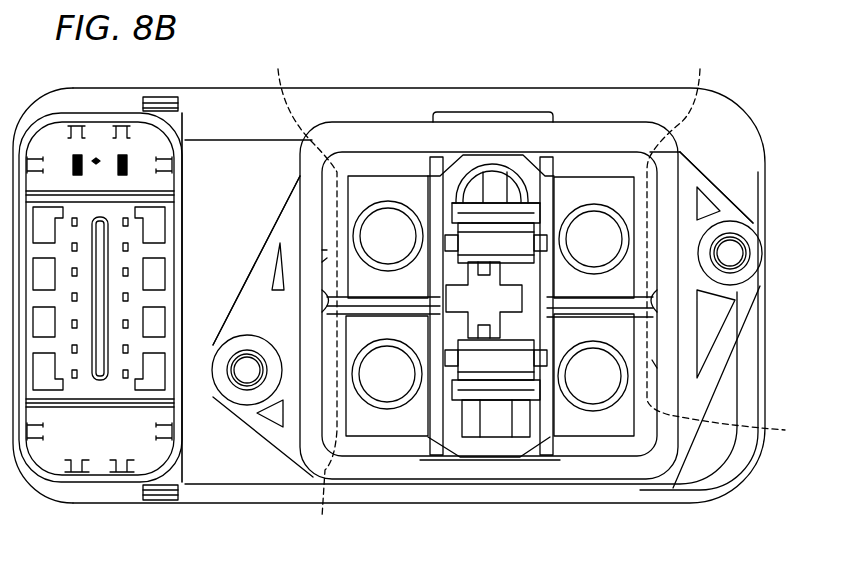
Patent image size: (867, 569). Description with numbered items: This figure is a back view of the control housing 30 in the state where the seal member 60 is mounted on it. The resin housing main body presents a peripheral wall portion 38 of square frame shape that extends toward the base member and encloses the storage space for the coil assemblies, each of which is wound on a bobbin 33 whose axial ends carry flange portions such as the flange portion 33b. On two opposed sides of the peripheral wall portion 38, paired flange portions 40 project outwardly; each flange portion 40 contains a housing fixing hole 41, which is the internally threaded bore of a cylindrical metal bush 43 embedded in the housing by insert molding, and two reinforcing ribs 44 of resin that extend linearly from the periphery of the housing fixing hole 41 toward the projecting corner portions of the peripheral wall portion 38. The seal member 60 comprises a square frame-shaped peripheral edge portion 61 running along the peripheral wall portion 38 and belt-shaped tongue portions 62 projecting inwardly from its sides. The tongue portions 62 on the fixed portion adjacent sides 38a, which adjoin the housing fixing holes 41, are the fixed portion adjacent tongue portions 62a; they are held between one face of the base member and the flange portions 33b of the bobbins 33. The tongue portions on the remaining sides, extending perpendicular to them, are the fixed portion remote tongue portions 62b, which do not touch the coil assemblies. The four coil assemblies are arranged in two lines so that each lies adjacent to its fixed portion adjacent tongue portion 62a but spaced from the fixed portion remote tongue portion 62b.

The control housing 30 is at (215, 108).
The bobbin 33 is at (443, 157).
The flange portion 33b is at (544, 295).
The peripheral wall portion 38 is at (418, 150).
The fixed portion adjacent side 38a is at (292, 247).
The flange portion 40 is at (246, 443).
The housing fixing hole 41 is at (237, 390).
The bush 43 is at (243, 345).
The reinforcing rib 44 is at (270, 243).
The seal member 60 is at (563, 143).
The peripheral edge portion 61 is at (622, 142).
The tongue portion 62 is at (373, 165).
The fixed portion adjacent tongue portion 62a is at (327, 256).
The fixed portion remote tongue portion 62b is at (543, 160).